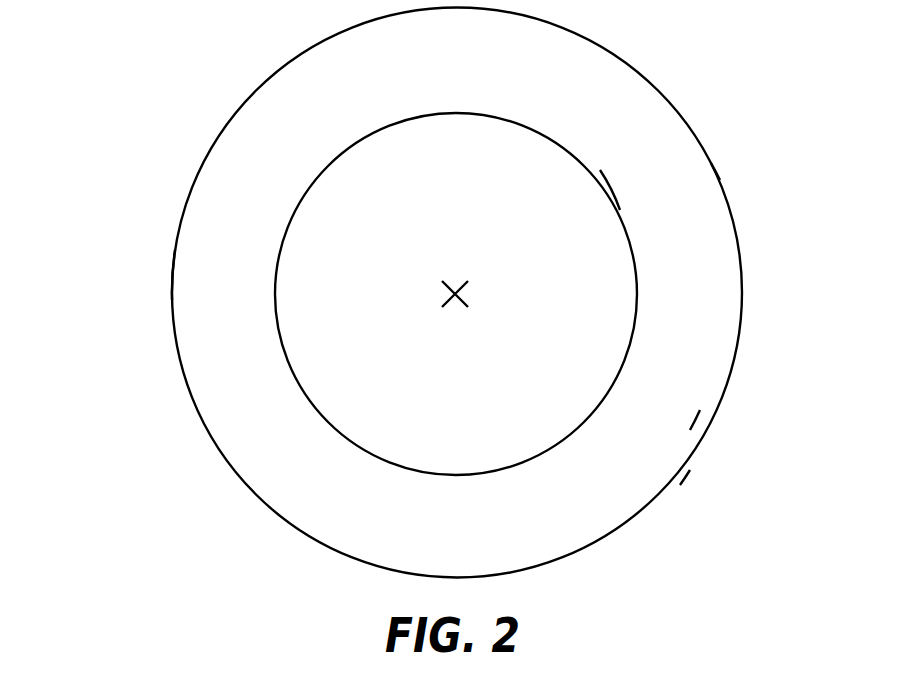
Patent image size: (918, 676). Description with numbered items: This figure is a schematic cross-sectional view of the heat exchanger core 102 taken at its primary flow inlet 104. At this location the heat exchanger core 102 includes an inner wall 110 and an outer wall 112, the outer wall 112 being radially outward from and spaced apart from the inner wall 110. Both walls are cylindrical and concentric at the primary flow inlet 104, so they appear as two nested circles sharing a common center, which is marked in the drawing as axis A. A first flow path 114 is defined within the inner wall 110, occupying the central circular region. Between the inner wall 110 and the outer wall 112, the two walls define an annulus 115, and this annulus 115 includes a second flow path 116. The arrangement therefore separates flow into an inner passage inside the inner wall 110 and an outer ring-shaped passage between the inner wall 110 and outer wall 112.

The heat exchanger core 102 is at (219, 135).
The primary flow inlet 104 is at (174, 250).
The inner wall 110 is at (598, 183).
The outer wall 112 is at (711, 163).
The first flow path 114 is at (530, 181).
The annulus 115 is at (640, 460).
The second flow path 116 is at (688, 406).
The central axis A is at (458, 293).